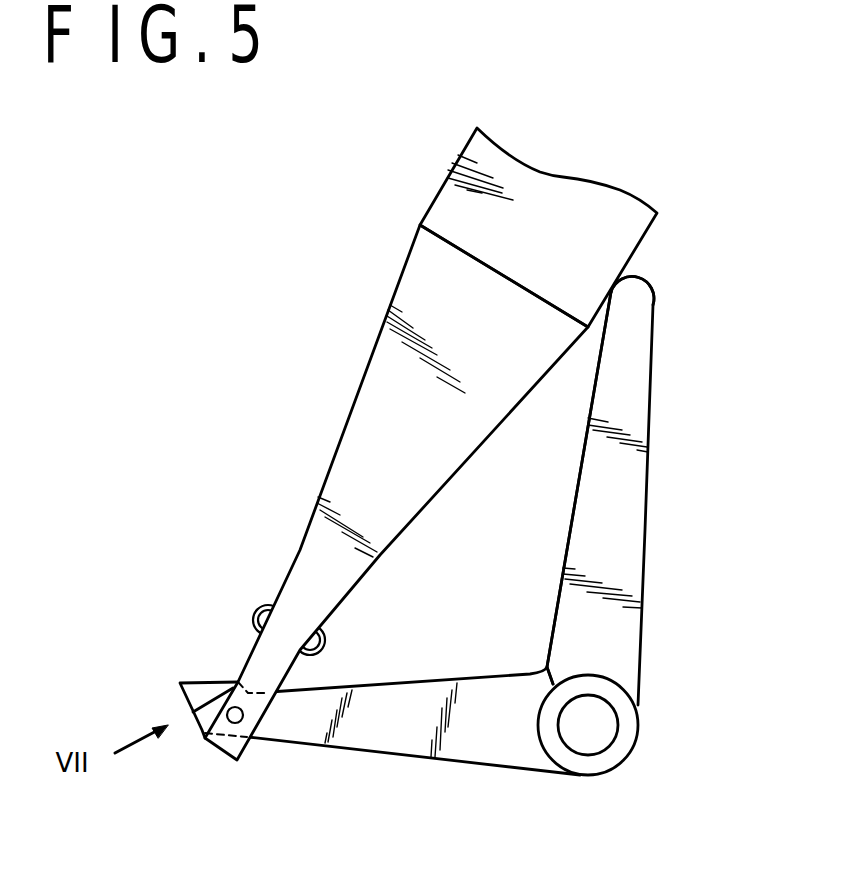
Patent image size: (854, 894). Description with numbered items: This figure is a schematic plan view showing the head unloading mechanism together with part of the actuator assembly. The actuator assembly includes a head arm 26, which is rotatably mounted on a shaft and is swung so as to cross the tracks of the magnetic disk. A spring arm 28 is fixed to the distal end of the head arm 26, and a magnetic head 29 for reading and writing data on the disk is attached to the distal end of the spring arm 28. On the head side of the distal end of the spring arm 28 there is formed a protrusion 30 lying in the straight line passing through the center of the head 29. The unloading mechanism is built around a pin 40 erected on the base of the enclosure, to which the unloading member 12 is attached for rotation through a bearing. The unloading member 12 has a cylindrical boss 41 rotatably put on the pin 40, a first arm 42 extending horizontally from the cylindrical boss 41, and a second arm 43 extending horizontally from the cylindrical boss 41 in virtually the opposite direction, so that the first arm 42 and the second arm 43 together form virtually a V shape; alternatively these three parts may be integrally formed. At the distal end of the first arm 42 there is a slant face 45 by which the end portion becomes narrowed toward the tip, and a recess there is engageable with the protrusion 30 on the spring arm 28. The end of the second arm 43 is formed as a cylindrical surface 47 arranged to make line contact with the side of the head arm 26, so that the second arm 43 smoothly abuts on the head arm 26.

The unloading member 12 is at (662, 514).
The head arm 26 is at (572, 200).
The spring arm 28 is at (370, 412).
The magnetic head 29 is at (263, 608).
The protrusion 30 is at (242, 720).
The pin 40 is at (598, 713).
The cylindrical boss 41 is at (620, 747).
The first arm 42 is at (418, 745).
The second arm 43 is at (638, 378).
The slant face 45 is at (193, 692).
The cylindrical surface 47 is at (632, 282).